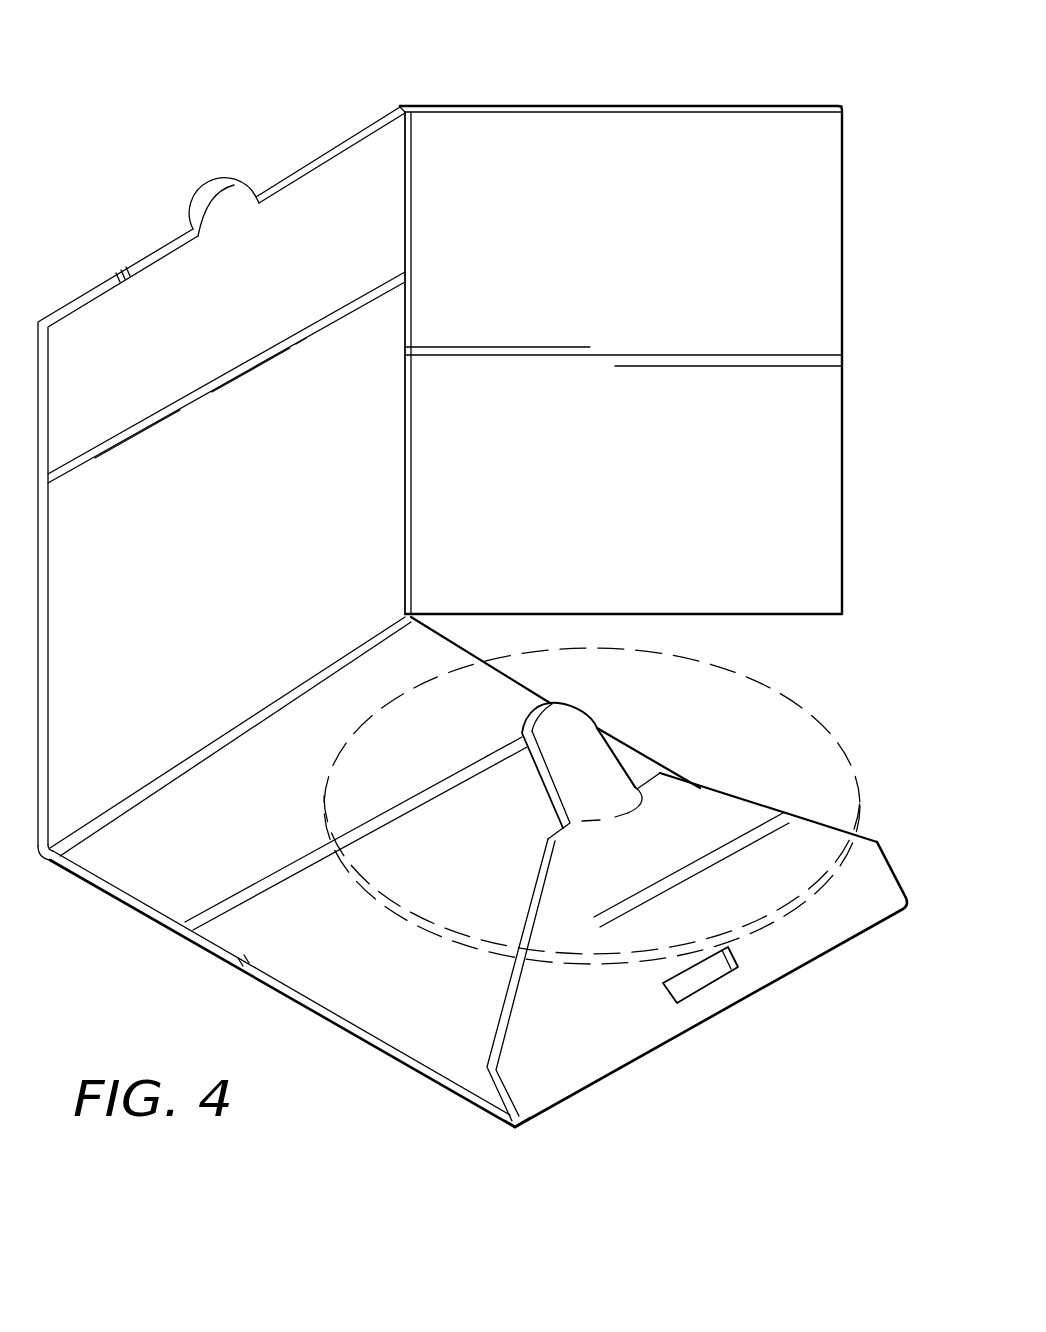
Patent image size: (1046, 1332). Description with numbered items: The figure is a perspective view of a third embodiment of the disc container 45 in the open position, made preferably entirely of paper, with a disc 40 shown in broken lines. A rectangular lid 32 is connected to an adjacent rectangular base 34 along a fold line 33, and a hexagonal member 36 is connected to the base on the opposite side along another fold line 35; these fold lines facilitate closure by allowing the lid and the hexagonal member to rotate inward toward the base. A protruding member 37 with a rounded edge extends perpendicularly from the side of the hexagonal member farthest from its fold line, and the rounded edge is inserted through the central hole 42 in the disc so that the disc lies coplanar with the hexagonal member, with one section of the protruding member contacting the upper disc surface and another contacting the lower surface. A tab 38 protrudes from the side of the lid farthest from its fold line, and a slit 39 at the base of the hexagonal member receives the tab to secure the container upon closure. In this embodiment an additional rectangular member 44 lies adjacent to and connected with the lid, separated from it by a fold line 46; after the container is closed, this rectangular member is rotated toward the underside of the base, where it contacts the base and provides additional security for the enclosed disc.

The lid 32 is at (340, 183).
The fold line 33 is at (85, 827).
The base 34 is at (247, 940).
The fold line 35 is at (545, 1115).
The hexagonal member 36 is at (618, 1040).
The protruding member 37 is at (591, 760).
The tab 38 is at (248, 190).
The slit 39 is at (703, 973).
The disc 40 is at (855, 770).
The central hole 42 is at (652, 757).
The rectangular member 44 is at (812, 297).
The third embodiment of the present invention 45 is at (706, 73).
The fold line 46 is at (408, 152).